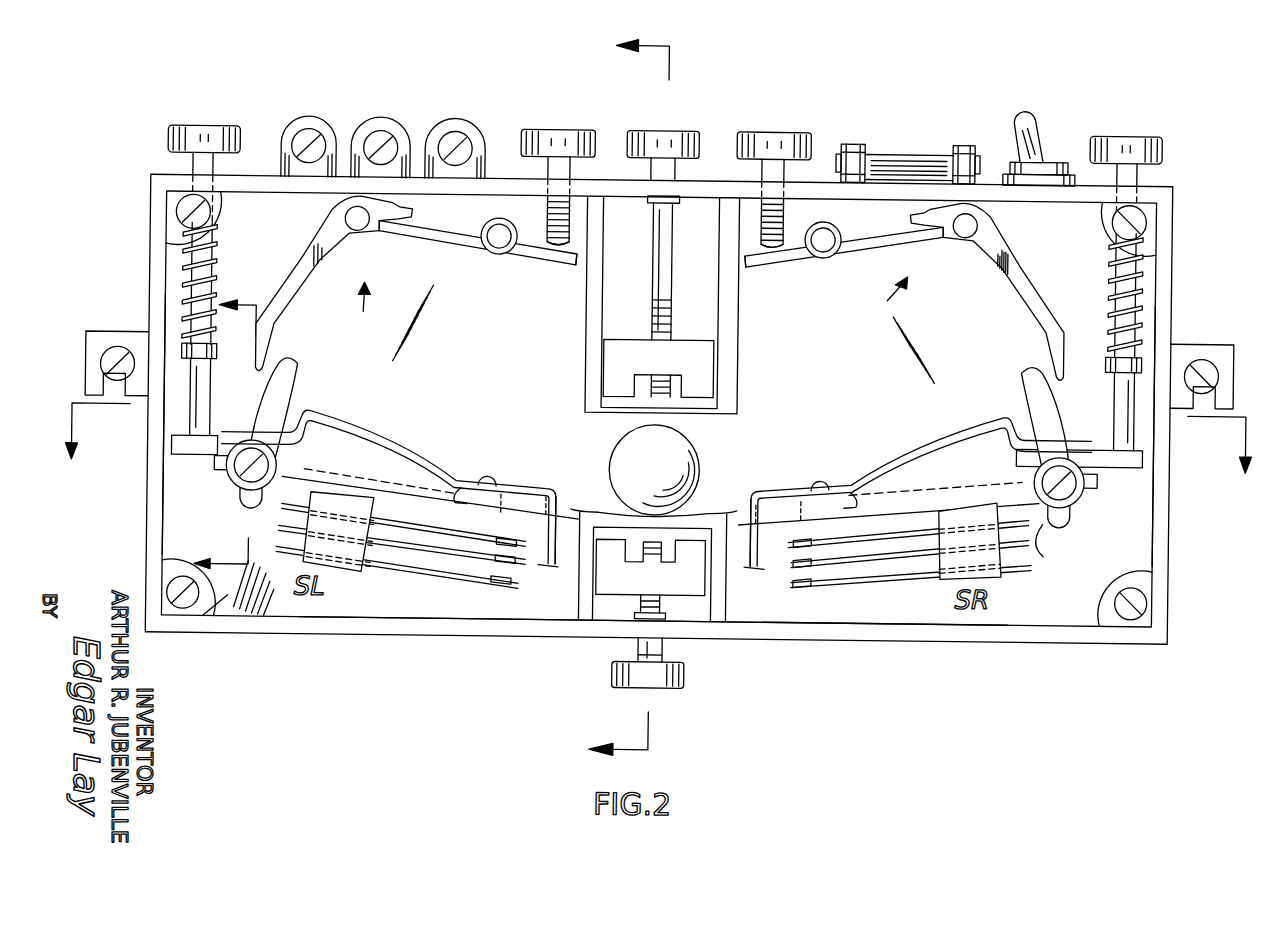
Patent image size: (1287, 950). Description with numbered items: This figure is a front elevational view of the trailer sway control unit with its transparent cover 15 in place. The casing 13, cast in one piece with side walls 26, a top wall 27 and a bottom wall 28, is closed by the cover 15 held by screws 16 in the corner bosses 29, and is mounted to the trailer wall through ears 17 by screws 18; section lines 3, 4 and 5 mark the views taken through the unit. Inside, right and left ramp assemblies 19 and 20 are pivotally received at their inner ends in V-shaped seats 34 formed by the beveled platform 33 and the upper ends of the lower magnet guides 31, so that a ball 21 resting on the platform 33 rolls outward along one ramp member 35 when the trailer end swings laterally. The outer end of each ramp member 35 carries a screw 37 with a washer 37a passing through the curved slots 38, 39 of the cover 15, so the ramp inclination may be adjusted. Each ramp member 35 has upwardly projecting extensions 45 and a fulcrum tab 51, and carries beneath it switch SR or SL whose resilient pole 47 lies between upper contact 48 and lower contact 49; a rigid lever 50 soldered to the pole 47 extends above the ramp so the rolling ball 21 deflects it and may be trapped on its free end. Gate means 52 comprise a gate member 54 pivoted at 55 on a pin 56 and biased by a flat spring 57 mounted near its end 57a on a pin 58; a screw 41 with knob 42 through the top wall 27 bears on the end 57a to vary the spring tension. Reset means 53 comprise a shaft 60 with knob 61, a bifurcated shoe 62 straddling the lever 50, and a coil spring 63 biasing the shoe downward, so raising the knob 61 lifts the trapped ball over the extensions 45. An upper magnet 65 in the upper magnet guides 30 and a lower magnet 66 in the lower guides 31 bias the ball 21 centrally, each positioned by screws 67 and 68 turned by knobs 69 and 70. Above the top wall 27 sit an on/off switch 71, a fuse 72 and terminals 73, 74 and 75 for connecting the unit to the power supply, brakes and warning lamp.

The section line 3- 3 is at (618, 398).
The section line 4- 4 is at (654, 445).
The section line 5- 5 is at (225, 420).
The casing 13 is at (164, 214).
The cover 15 is at (250, 612).
The screws 16 is at (192, 615).
The ears 17 is at (85, 352).
The screws 18 is at (118, 340).
The right ramp assembly 19 is at (861, 458).
The left ramp assembly 20 is at (448, 436).
The ball 21 is at (692, 455).
The side walls 26 is at (164, 486).
The top wall 27 is at (1172, 185).
The bottom wall 28 is at (1010, 640).
The corner bosses 29 is at (178, 590).
The upper magnet guides 30 is at (590, 205).
The lower magnet guides 31 is at (580, 600).
The platform 33 is at (598, 500).
The seats 34 is at (576, 512).
The ramp member 35 is at (462, 496).
The screw 37 is at (240, 484).
The washer 37a is at (1040, 514).
The slot 38 is at (1024, 386).
The second slot 39 is at (287, 396).
The screw 41 is at (545, 214).
The knob 42 is at (569, 131).
The extensions 45 is at (340, 436).
The resilient pole 47 is at (502, 548).
The upper switch contact 48 is at (480, 518).
The lower contact 49 is at (512, 582).
The control bar or lever 50 is at (522, 488).
The tab or projection 51 is at (490, 486).
The gate means 52 is at (628, 308).
The reset means 53 is at (230, 232).
The gate member 54 is at (292, 292).
The pivot 55 is at (366, 232).
The pin 56 is at (356, 234).
The flat spring 57 is at (440, 236).
The end 57a is at (562, 262).
The pin 58 is at (494, 242).
The shaft 60 is at (185, 294).
The knob 61 is at (178, 131).
The bifurcated shoe 62 is at (172, 456).
The coil spring 63 is at (212, 256).
The upper magnet 65 is at (675, 370).
The lower magnet 66 is at (666, 587).
The screw 67 is at (697, 175).
The screw 68 is at (675, 652).
The knob 69 is at (660, 128).
The knob 70 is at (648, 692).
The on/off switch 71 is at (1035, 126).
The fuse 72 is at (880, 158).
The terminal 73 is at (452, 126).
The terminal 74 is at (375, 126).
The terminal 75 is at (302, 126).